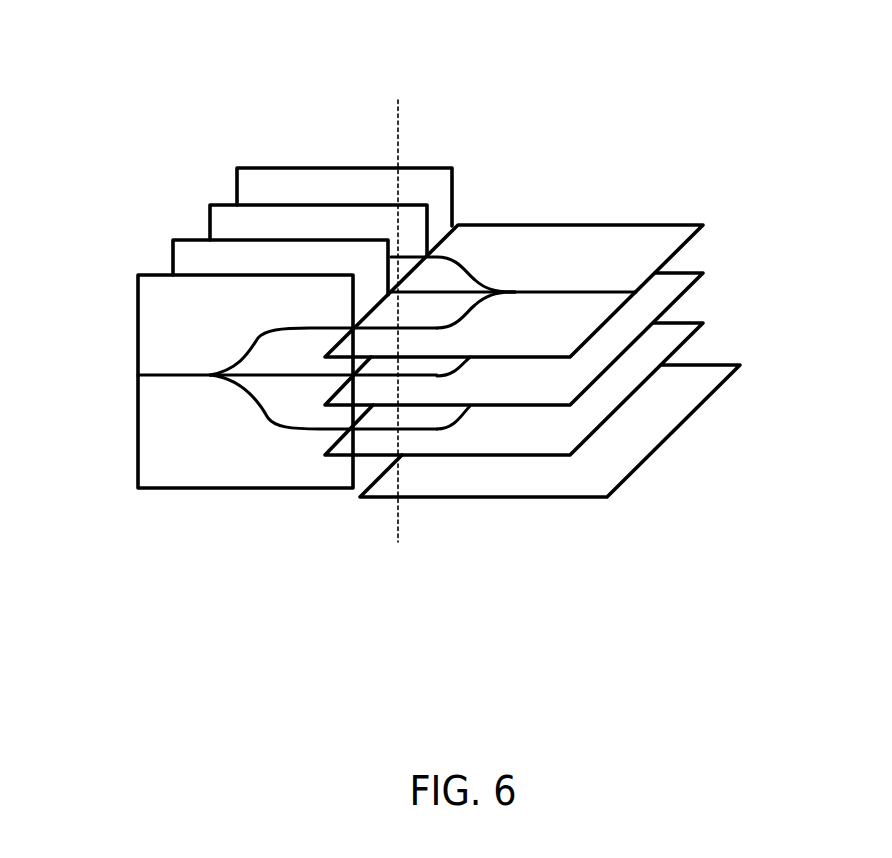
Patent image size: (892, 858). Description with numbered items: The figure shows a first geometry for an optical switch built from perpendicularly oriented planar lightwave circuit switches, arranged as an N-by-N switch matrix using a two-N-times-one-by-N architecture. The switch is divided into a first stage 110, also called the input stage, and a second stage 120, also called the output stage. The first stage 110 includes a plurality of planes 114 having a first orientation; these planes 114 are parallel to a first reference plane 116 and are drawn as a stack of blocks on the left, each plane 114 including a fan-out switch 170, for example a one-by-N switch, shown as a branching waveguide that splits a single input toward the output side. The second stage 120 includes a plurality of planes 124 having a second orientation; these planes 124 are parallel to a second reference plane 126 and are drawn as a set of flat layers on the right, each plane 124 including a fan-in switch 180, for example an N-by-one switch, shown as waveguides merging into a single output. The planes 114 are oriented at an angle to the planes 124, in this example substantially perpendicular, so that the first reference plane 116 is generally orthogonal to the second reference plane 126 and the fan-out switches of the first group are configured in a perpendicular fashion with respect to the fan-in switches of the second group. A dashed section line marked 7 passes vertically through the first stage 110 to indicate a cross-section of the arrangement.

The section line 7- 7 is at (397, 319).
The first stage 110 is at (288, 274).
The planes 114 is at (209, 222).
The first reference plane 116 is at (450, 168).
The second stage 120 is at (557, 330).
The planes 124 is at (635, 343).
The second reference plane 126 is at (489, 497).
The fan-out switch 170 is at (267, 418).
The fan-in switch 180 is at (597, 291).